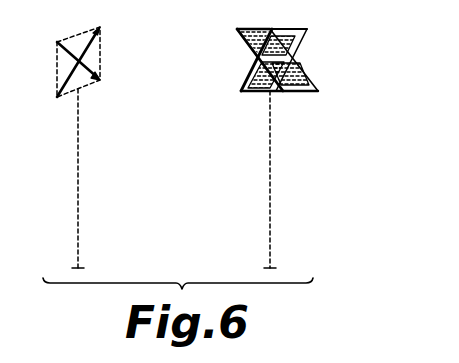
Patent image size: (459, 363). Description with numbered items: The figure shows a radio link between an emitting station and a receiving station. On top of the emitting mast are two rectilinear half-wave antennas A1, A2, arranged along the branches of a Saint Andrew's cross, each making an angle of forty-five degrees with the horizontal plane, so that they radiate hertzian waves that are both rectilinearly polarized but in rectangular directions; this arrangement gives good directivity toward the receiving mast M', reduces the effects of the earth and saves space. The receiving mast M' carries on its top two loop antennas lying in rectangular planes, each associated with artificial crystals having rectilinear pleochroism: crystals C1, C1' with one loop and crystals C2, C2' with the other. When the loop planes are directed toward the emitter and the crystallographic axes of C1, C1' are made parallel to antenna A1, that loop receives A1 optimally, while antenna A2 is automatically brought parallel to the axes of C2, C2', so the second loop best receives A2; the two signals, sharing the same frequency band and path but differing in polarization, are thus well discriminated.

The rectilinear half-wave antenna A1 is at (98, 42).
The rectilinear half-wave antenna A2 is at (98, 84).
The receiving mast M' is at (185, 178).
The artificial crystal C1 is at (282, 60).
The artificial crystal C2 is at (280, 44).
The artificial crystal C1' is at (280, 78).
The artificial crystal C2' is at (292, 63).